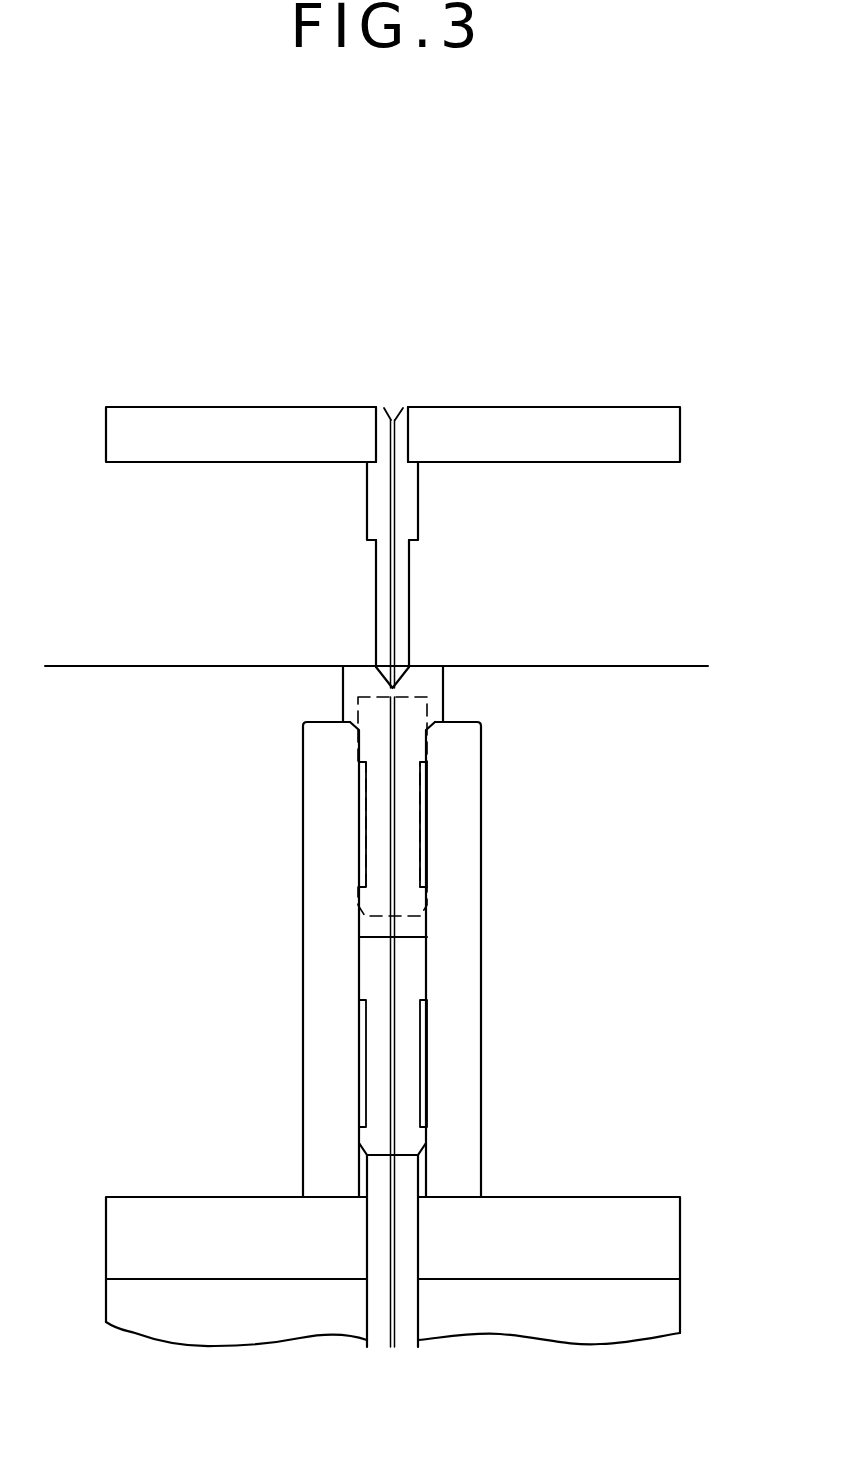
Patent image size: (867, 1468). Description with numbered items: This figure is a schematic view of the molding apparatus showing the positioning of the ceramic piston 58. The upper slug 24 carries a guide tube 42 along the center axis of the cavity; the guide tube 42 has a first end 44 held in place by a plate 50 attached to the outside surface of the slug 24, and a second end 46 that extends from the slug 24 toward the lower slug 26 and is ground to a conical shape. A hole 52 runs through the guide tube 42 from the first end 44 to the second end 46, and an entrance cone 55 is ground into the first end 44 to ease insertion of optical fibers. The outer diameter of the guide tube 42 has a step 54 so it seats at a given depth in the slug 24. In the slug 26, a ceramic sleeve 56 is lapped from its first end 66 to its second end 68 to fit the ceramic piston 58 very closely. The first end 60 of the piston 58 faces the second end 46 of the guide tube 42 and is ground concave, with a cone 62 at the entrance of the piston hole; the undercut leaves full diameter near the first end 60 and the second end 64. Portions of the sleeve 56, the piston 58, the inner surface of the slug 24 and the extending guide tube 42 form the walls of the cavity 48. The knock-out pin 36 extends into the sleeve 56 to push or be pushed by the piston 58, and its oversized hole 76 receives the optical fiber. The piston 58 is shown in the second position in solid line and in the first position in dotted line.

The slug 24 is at (123, 586).
The slug 26 is at (93, 972).
The knock-out pin 36 is at (382, 1178).
The guide tube 42 is at (390, 632).
The first end 44 is at (382, 436).
The second end 46 is at (402, 677).
The cavity 48 is at (355, 680).
The plate 50 is at (199, 449).
The hole 52 is at (398, 595).
The step 54 is at (372, 540).
The entrance cone 55 is at (393, 403).
The ceramic sleeve 56 is at (318, 768).
The ceramic piston 58 is at (377, 960).
The first end 60 is at (392, 938).
The cone 62 is at (392, 938).
The second end 64 is at (378, 1153).
The first end 66 is at (300, 722).
The second end 68 is at (327, 1198).
The knock-out pin hole 76 is at (530, 1332).